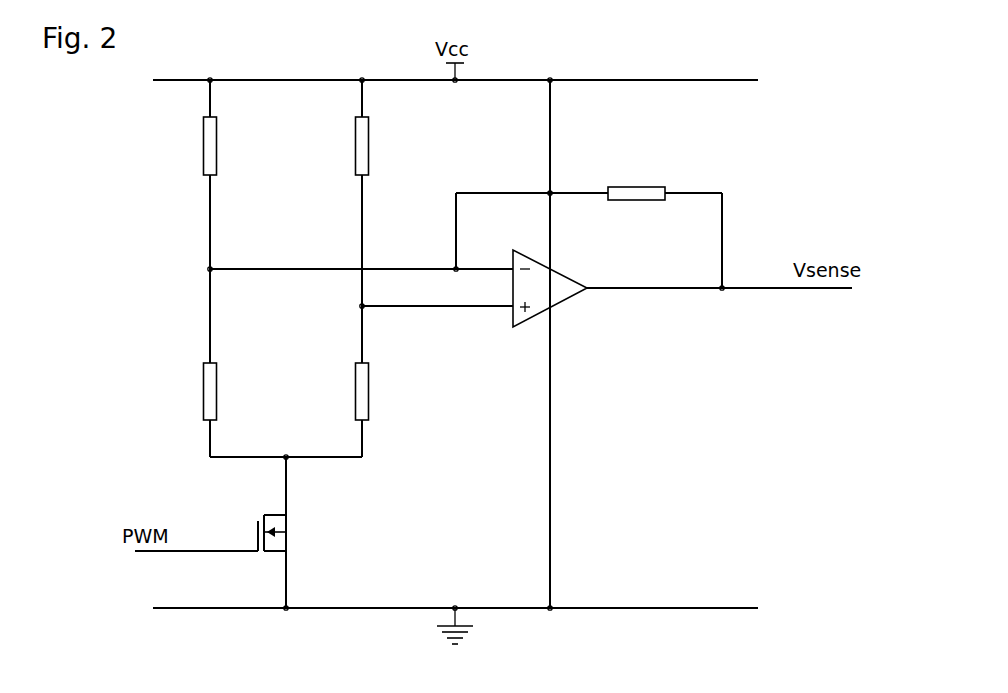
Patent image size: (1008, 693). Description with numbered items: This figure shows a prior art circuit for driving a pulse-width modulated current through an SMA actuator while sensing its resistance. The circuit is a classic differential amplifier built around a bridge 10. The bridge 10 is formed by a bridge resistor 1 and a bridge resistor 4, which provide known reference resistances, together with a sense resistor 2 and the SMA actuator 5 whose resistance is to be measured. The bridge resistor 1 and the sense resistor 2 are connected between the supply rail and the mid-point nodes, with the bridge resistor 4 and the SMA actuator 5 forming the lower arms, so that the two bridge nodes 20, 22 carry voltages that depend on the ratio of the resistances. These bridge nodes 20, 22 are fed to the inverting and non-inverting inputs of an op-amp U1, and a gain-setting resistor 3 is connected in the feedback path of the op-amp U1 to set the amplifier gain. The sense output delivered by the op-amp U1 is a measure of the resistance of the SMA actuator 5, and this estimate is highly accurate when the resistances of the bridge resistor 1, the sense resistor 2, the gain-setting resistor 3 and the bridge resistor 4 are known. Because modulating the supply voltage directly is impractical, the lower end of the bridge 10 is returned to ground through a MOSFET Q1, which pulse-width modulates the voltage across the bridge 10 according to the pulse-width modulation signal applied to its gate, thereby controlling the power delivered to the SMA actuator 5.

The bridge resistor 1 is at (207, 160).
The sense resistor 2 is at (362, 148).
The gain-setting resistor 3 is at (640, 193).
The bridge resistor 4 is at (207, 400).
The SMA actuator 5 is at (366, 404).
The bridge 10 is at (130, 399).
The first bridge node 20 is at (208, 268).
The second bridge node 22 is at (361, 307).
The MOSFET Q1 is at (315, 514).
The op-amp U1 is at (553, 290).